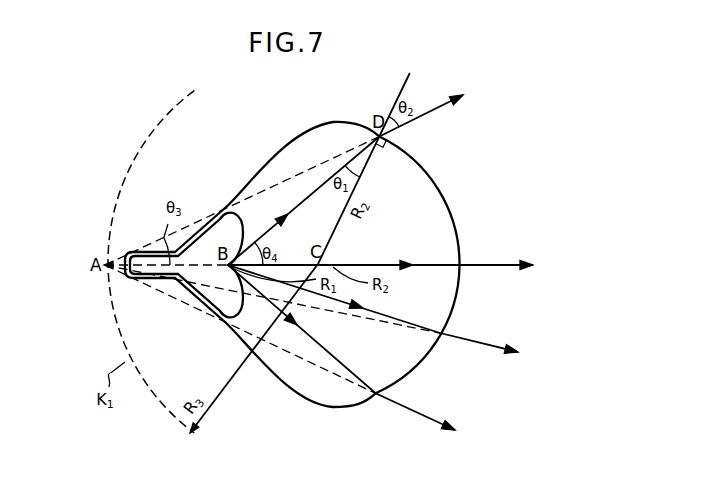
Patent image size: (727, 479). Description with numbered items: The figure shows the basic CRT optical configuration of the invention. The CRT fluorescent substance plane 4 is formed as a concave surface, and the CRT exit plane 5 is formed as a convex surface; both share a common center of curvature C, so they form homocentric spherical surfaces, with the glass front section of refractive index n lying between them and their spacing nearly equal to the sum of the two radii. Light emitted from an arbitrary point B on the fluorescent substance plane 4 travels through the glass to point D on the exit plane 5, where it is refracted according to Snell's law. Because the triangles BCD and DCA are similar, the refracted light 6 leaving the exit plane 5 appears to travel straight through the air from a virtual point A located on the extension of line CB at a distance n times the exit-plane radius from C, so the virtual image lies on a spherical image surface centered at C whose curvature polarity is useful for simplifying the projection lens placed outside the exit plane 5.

The CRT fluorescent substance plane 4 is at (226, 317).
The CRT exit plane 5 is at (452, 218).
The light 6 is at (438, 106).